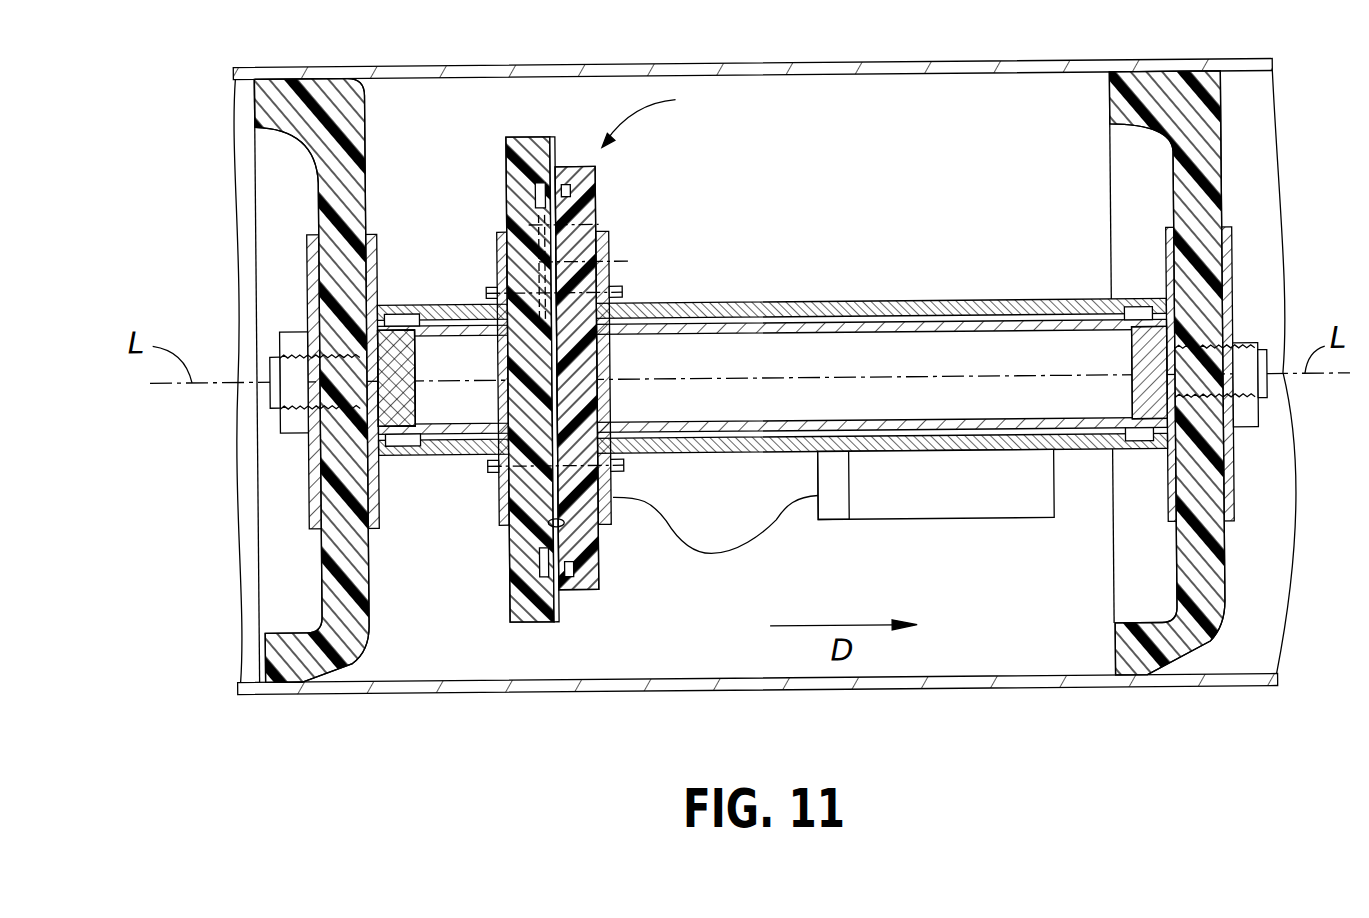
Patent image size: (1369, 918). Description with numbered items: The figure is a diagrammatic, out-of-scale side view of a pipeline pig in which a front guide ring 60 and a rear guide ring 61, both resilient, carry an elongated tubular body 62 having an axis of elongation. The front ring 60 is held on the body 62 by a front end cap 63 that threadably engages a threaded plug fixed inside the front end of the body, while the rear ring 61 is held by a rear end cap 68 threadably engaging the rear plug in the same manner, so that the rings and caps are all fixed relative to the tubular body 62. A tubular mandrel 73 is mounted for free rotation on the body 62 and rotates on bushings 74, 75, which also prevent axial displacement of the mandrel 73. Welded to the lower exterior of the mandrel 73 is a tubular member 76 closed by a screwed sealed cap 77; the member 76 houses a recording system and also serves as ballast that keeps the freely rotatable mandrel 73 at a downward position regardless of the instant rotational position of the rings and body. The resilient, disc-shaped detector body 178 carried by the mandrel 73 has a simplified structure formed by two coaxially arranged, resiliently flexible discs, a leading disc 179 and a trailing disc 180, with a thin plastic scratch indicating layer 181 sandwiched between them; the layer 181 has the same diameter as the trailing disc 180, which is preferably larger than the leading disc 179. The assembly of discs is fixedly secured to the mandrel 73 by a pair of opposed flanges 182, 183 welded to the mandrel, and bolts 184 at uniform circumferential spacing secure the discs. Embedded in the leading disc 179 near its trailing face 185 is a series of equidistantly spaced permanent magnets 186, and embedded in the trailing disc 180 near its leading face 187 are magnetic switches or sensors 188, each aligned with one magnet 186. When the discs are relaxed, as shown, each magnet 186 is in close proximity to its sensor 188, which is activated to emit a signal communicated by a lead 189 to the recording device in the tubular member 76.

The front guide ring 60 is at (1170, 152).
The rear guide ring 61 is at (327, 183).
The tubular body 62 is at (963, 348).
The front end cap 63 is at (1245, 423).
The rear end cap 68 is at (292, 419).
The tubular mandrel 73 is at (893, 304).
The bushing 74 is at (1143, 309).
The bushing 75 is at (398, 311).
The tubular member 76 is at (955, 505).
The screwed sealed cap 77 is at (829, 505).
The detector body 178 is at (661, 114).
The leading disc 179 is at (578, 236).
The trailing disc 180 is at (532, 135).
The scratch indicating layer 181 is at (557, 610).
The flange 182 is at (612, 247).
The flange 183 is at (497, 250).
The bolt 184 is at (624, 291).
The trailing face 185 is at (565, 210).
The permanent magnet 186 is at (578, 167).
The leading face 187 is at (560, 520).
The magnetic sensor 188 is at (535, 190).
The lead 189 is at (540, 222).